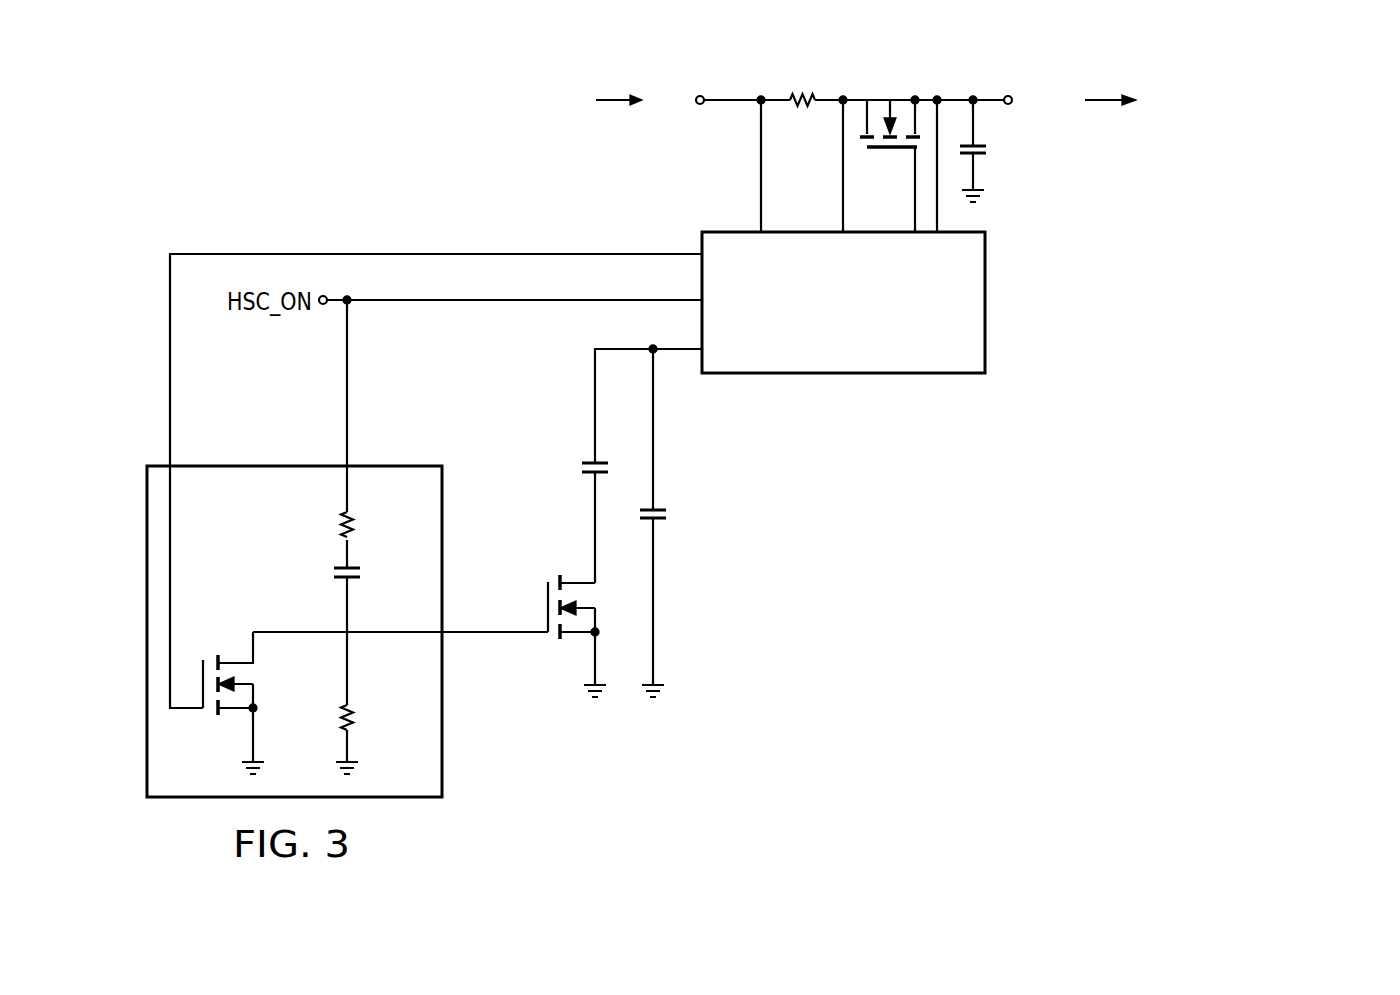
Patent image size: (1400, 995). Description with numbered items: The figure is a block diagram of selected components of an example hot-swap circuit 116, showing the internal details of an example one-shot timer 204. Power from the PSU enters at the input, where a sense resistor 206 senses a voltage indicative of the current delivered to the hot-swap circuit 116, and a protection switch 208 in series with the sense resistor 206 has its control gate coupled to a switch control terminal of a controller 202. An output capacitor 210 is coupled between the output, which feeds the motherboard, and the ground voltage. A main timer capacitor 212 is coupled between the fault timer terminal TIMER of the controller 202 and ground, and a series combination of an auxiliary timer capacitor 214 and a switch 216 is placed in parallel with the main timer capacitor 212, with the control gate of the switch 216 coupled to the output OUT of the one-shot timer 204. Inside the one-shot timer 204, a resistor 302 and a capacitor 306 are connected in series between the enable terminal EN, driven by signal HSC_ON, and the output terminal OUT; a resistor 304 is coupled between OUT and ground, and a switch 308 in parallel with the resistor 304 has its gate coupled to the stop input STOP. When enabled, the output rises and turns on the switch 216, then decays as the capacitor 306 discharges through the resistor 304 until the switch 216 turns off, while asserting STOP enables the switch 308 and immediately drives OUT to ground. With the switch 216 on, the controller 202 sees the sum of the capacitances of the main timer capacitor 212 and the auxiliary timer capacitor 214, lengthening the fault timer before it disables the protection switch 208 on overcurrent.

The hot-swap circuit 116 is at (316, 96).
The sense resistor 206 is at (805, 94).
The protection switch 208 is at (880, 151).
The output capacitor 210 is at (986, 148).
The controller 202 is at (986, 317).
The main timer capacitor 212 is at (667, 514).
The auxiliary timer capacitor 214 is at (583, 466).
The switch 216 is at (547, 598).
The one-shot timer 204 is at (147, 649).
The resistor 302 is at (342, 518).
The capacitor 306 is at (335, 571).
The resistor 304 is at (353, 720).
The switch 308 is at (228, 711).